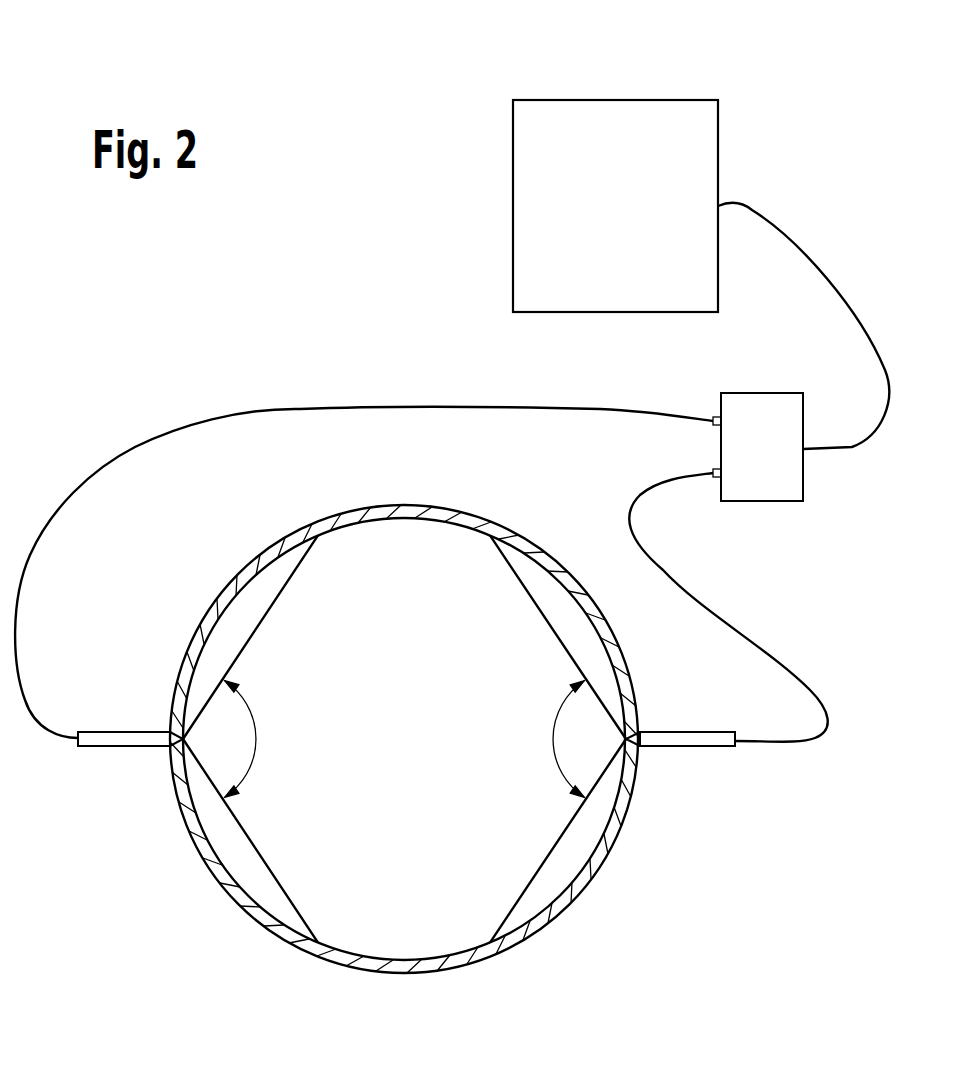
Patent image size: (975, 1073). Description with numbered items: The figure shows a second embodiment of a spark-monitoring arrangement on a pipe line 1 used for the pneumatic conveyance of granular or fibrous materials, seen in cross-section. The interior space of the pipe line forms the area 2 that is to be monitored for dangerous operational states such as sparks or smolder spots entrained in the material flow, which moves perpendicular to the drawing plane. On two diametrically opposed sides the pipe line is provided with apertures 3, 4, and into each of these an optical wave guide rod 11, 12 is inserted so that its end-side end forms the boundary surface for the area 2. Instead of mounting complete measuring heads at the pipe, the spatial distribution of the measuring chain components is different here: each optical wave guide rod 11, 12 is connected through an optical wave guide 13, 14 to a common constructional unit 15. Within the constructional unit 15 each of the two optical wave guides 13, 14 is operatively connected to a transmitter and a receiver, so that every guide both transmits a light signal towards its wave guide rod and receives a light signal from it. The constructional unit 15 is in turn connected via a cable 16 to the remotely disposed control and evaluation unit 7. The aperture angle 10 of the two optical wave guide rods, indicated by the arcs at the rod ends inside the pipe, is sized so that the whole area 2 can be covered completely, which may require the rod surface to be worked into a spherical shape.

The pipe line 1 is at (370, 508).
The area 2 is at (423, 568).
The aperture 3 is at (175, 752).
The aperture 4 is at (637, 752).
The control and evaluation unit 7 is at (676, 150).
The aperture angle 10 is at (257, 718).
The optical wave guide rod 11 is at (120, 732).
The optical wave guide rod 12 is at (720, 748).
The optical wave guide 13 is at (172, 438).
The optical wave guide 14 is at (628, 498).
The constructional unit 15 is at (782, 480).
The cable 16 is at (793, 235).